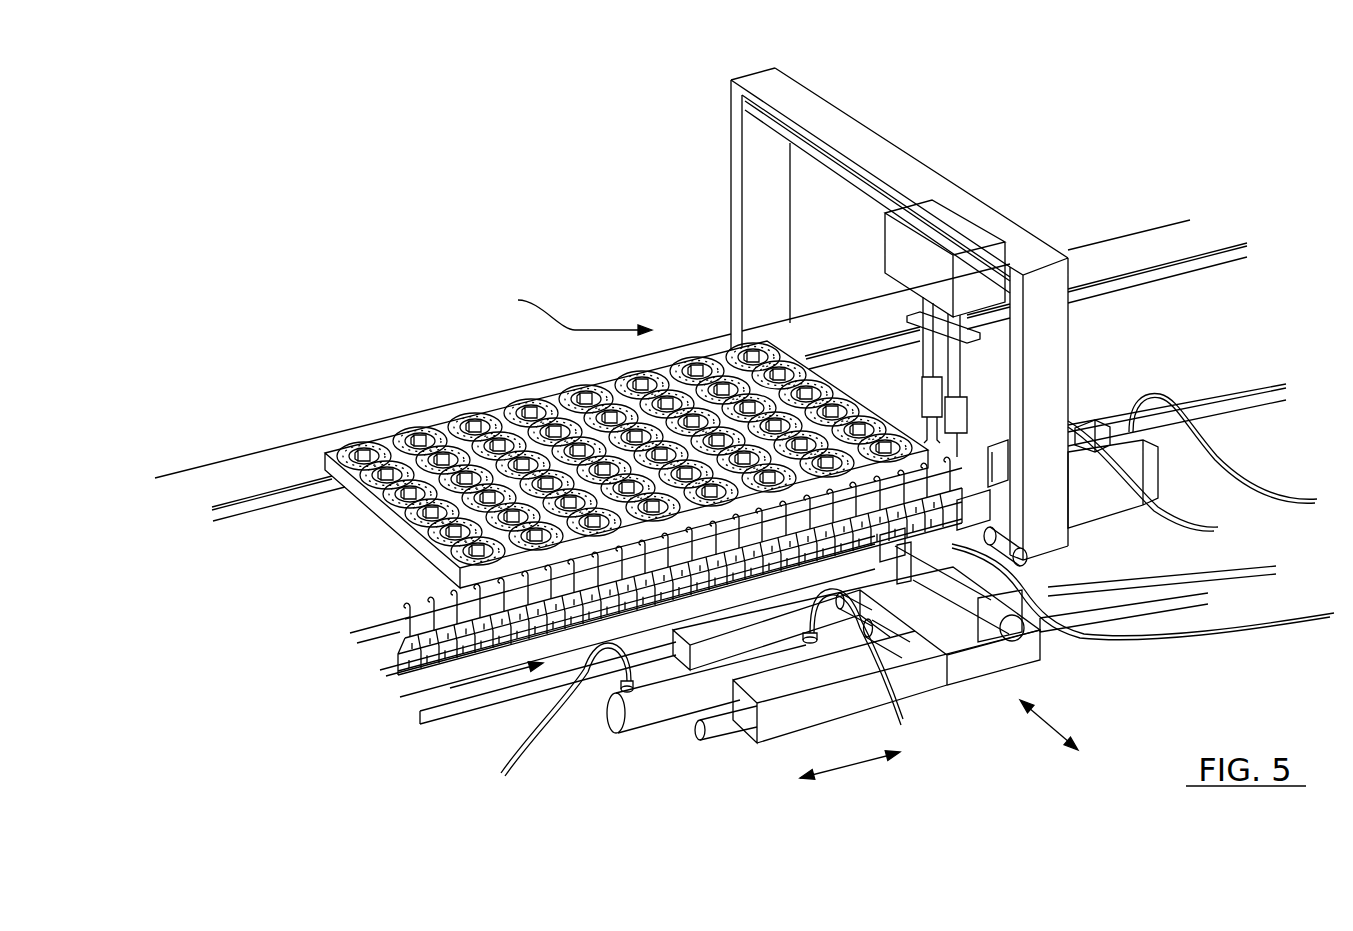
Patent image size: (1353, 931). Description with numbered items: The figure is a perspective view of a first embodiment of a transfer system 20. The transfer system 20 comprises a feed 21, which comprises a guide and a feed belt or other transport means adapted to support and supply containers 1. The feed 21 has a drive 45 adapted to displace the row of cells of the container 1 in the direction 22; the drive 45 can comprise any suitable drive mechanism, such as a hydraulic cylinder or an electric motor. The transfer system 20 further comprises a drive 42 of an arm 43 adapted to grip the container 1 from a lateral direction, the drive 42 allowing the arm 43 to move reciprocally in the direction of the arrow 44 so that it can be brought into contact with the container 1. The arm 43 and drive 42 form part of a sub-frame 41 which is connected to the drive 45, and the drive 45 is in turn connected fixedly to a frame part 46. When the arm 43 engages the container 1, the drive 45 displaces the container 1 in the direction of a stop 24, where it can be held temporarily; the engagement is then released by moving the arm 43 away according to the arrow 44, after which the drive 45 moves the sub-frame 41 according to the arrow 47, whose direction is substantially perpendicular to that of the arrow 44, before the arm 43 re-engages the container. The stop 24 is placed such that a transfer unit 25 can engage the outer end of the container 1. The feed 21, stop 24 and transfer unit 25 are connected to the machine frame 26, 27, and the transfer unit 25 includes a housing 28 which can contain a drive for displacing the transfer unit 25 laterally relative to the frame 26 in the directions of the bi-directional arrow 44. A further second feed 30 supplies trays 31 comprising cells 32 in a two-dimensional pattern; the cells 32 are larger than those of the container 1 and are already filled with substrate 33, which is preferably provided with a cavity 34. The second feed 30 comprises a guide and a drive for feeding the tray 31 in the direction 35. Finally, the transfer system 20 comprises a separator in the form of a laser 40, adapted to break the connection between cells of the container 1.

The container 1 is at (372, 655).
The transfer system 20 is at (605, 217).
The feed 21 is at (405, 690).
The direction 22 is at (485, 685).
The stop 24 is at (968, 445).
The transfer unit 25 is at (934, 311).
The frame 26 is at (862, 127).
The frame 27 is at (352, 635).
The housing 28 is at (946, 221).
The second feed 30 is at (235, 540).
The tray 31 is at (597, 437).
The cells 32 is at (393, 405).
The substrate 33 is at (367, 448).
The cavity 34 is at (352, 452).
The direction 35 is at (570, 310).
The laser 40 is at (1075, 545).
The sub-frame 41 is at (1037, 664).
The drive 42 is at (958, 672).
The arm 43 is at (866, 543).
The arrow 44 is at (1032, 718).
The drive 45 is at (655, 715).
The frame part 46 is at (790, 752).
The arrow 47 is at (893, 776).